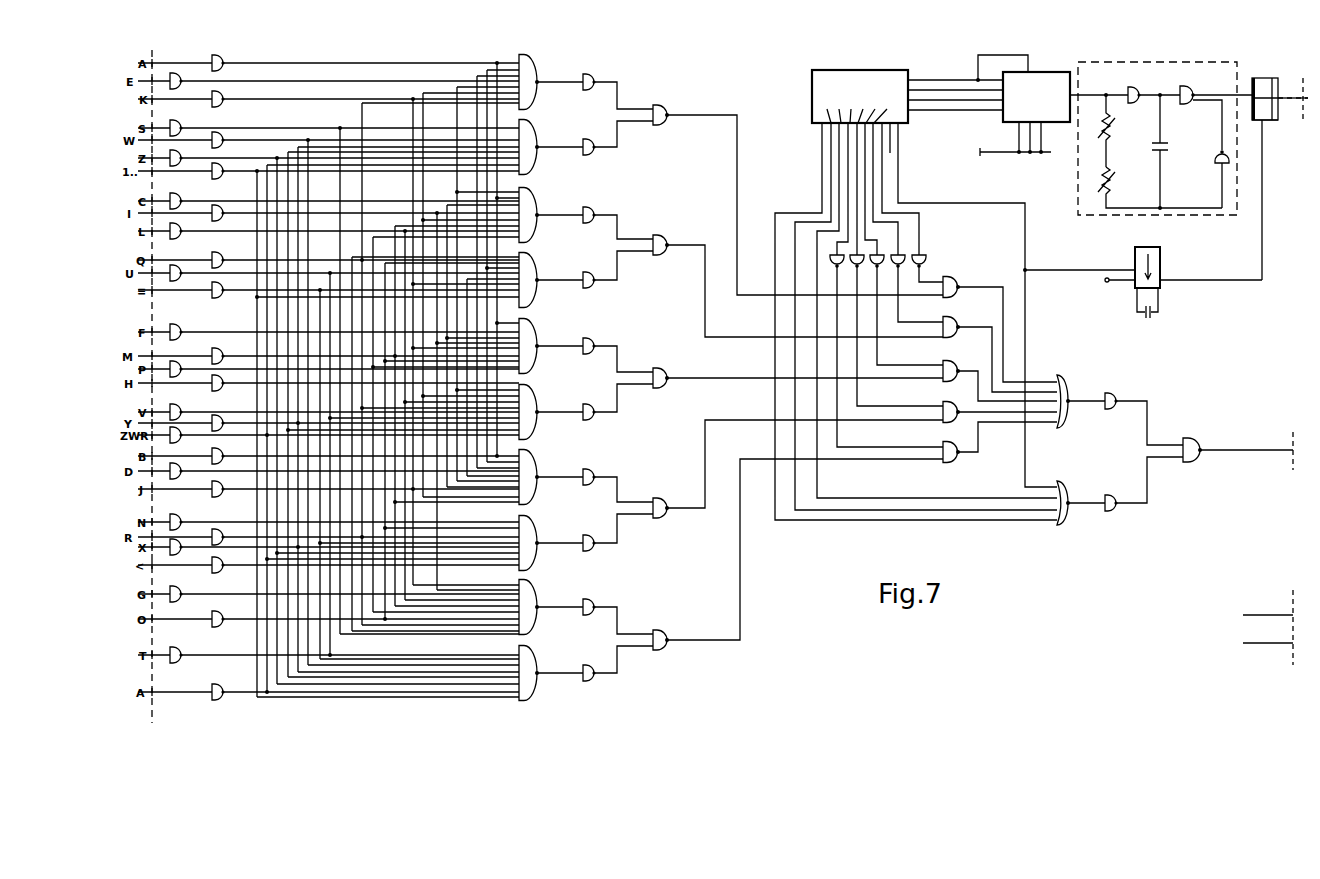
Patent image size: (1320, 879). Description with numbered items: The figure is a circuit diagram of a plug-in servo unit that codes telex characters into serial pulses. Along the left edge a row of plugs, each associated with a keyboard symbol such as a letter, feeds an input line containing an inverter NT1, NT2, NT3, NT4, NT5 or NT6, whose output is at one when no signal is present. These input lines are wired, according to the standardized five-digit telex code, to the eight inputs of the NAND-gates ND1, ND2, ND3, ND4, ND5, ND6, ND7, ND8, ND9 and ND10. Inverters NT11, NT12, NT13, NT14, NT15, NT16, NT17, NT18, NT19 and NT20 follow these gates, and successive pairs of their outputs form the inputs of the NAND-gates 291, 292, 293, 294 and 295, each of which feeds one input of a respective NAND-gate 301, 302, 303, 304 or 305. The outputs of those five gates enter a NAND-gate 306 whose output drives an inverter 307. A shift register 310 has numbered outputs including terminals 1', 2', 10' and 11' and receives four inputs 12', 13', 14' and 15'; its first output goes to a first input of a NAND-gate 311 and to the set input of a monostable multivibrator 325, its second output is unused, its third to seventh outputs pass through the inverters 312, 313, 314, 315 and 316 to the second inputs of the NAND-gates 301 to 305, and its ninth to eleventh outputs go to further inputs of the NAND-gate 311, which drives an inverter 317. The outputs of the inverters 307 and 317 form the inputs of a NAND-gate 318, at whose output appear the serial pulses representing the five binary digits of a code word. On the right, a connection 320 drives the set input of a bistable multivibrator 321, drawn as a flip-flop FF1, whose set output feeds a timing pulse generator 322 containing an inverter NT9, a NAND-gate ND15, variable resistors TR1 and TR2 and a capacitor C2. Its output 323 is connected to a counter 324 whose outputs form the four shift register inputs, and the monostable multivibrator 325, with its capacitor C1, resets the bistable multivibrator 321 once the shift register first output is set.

The inverter NT1 is at (209, 107).
The inverter NT2 is at (209, 218).
The inverter NT3 is at (209, 347).
The inverter NT4 is at (210, 465).
The inverter NT5 is at (209, 588).
The inverter NT6 is at (231, 686).
The NAND-gate ND1 is at (537, 74).
The NAND-gate ND2 is at (537, 139).
The NAND-gate ND3 is at (537, 207).
The NAND-gate ND4 is at (537, 272).
The NAND-gate ND5 is at (537, 338).
The NAND-gate ND6 is at (537, 404).
The NAND-gate ND7 is at (537, 469).
The NAND-gate ND8 is at (537, 535).
The NAND-gate ND9 is at (537, 599).
The NAND-gate ND10 is at (537, 665).
The inverter NT11 is at (618, 86).
The inverter NT12 is at (618, 138).
The inverter NT13 is at (618, 217).
The inverter NT14 is at (618, 269).
The inverter NT15 is at (618, 349).
The inverter NT16 is at (618, 402).
The inverter NT17 is at (618, 480).
The inverter NT18 is at (618, 532).
The inverter NT19 is at (618, 611).
The inverter NT20 is at (618, 663).
The NAND-gate 291 is at (660, 104).
The NAND-gate 292 is at (660, 234).
The NAND-gate 293 is at (660, 367).
The NAND-gate 294 is at (660, 497).
The NAND-gate 295 is at (660, 629).
The NAND-gate 301 is at (957, 280).
The NAND-gate 302 is at (962, 315).
The NAND-gate 303 is at (962, 359).
The NAND-gate 304 is at (962, 400).
The NAND-gate 305 is at (958, 462).
The NAND-gate 306 is at (1062, 375).
The inverter 307 is at (1113, 387).
The shift register 310 is at (870, 72).
The NAND-gate 311 is at (1062, 481).
The inverter 312 is at (921, 256).
The inverter 313 is at (898, 267).
The inverter 314 is at (877, 255).
The inverter 315 is at (856, 267).
The inverter 316 is at (835, 267).
The inverter 317 is at (1113, 489).
The NAND-gate 318 is at (1193, 432).
The connection 320 is at (1289, 96).
The bistable multivibrator 321 is at (1264, 113).
The timing pulse generator 322 is at (1106, 63).
The output of timing pulse generator 323 is at (1072, 72).
The counter 324 is at (1012, 122).
The monostable multivibrator 325 is at (1160, 256).
The inverter NT9 is at (1191, 138).
The NAND gate ND15 is at (1214, 109).
The variable resistor TR1 is at (1120, 131).
The variable resistor TR2 is at (1160, 187).
The capacitor C1 is at (1147, 312).
The capacitor C2 is at (1167, 151).
The flip-flop FF1 is at (1264, 169).
The counter output 1' is at (909, 135).
The counter output 2' is at (905, 160).
The counter output 10' is at (808, 161).
The counter output 11' is at (809, 137).
The counter output 12' is at (955, 122).
The counter output 13' is at (955, 117).
The counter output 14' is at (955, 71).
The counter output 15' is at (955, 66).